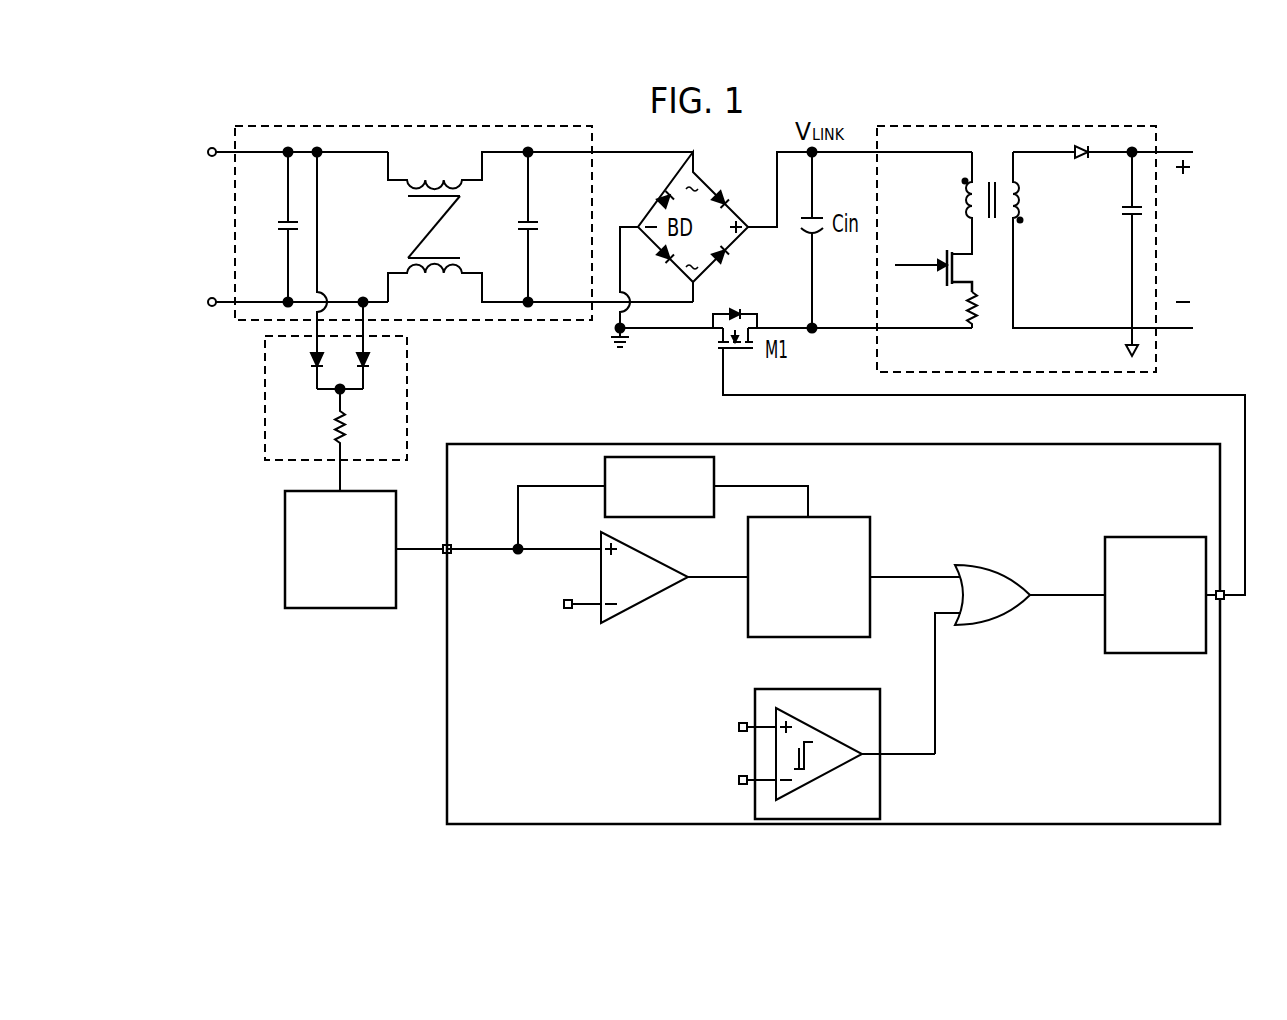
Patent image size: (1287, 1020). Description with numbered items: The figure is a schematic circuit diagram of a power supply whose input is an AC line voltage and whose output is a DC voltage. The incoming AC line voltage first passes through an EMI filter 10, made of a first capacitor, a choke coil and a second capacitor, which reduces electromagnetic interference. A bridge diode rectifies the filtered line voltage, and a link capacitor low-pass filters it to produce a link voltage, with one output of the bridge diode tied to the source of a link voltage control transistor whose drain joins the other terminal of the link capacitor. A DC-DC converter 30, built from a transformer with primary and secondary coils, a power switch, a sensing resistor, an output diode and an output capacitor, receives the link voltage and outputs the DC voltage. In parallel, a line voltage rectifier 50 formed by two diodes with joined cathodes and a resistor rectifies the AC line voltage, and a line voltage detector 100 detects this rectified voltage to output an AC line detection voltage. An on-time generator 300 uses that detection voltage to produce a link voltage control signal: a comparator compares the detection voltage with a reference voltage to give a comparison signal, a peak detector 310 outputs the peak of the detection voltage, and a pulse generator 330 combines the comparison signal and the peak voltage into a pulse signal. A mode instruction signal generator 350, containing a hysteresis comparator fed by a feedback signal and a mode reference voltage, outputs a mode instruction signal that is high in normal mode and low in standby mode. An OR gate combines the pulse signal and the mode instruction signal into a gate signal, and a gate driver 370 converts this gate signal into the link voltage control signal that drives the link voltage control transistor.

The electromagnetic interference (EMI) filter 10 is at (410, 126).
The DC-DC converter 30 is at (1012, 126).
The line voltage rectifier 50 is at (265, 398).
The line voltage detector 100 is at (340, 610).
The on-time generator 300 is at (503, 443).
The peak detector 310 is at (656, 456).
The pulse generator 330 is at (843, 517).
The mode instruction signal generator 350 is at (881, 796).
The gate driver 370 is at (1155, 656).